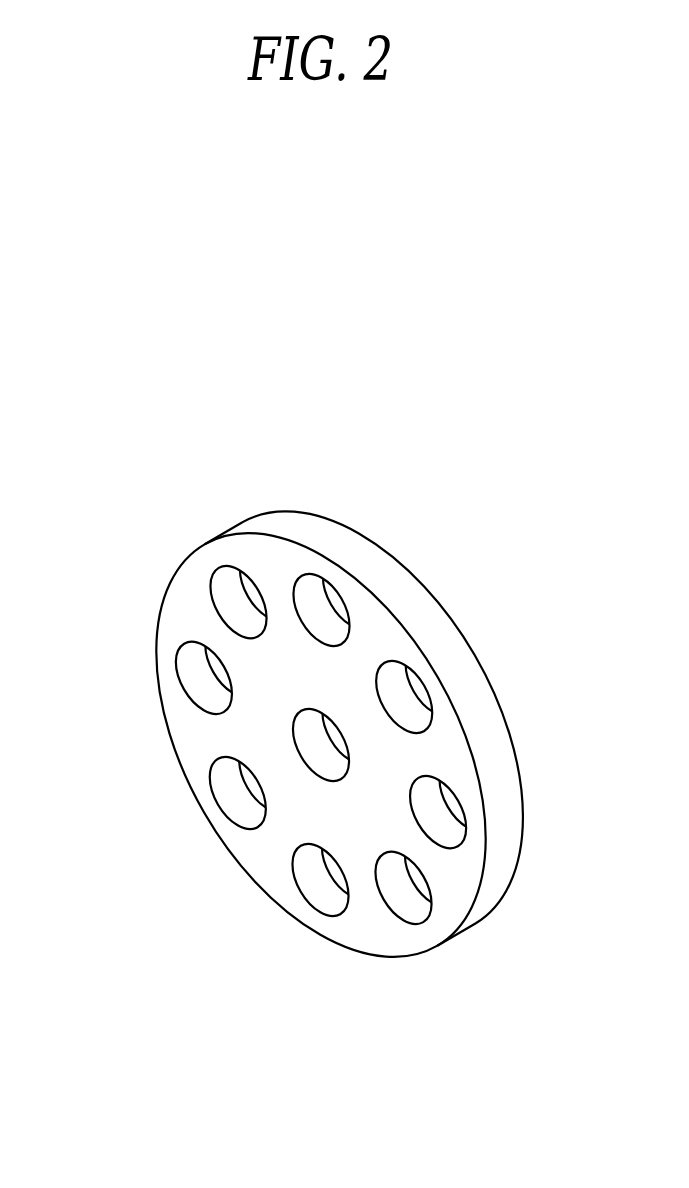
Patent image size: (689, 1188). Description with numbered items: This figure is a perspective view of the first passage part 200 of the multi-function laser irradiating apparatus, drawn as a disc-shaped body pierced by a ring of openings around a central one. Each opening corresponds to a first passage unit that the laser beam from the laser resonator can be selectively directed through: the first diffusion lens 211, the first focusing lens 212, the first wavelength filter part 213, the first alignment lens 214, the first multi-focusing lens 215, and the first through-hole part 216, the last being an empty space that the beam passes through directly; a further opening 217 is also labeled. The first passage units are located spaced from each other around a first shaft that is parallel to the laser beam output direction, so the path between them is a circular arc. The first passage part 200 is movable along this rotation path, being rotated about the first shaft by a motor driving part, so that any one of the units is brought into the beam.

The first passage part 200 is at (291, 398).
The first diffusion lens 211 is at (316, 890).
The first focusing lens 212 is at (228, 805).
The first wavelength filter part 213 is at (193, 684).
The first alignment lens 214 is at (237, 595).
The first multi-focusing lens 215 is at (313, 600).
The first through-hole part 216 is at (415, 710).
The through hole 217 is at (448, 823).